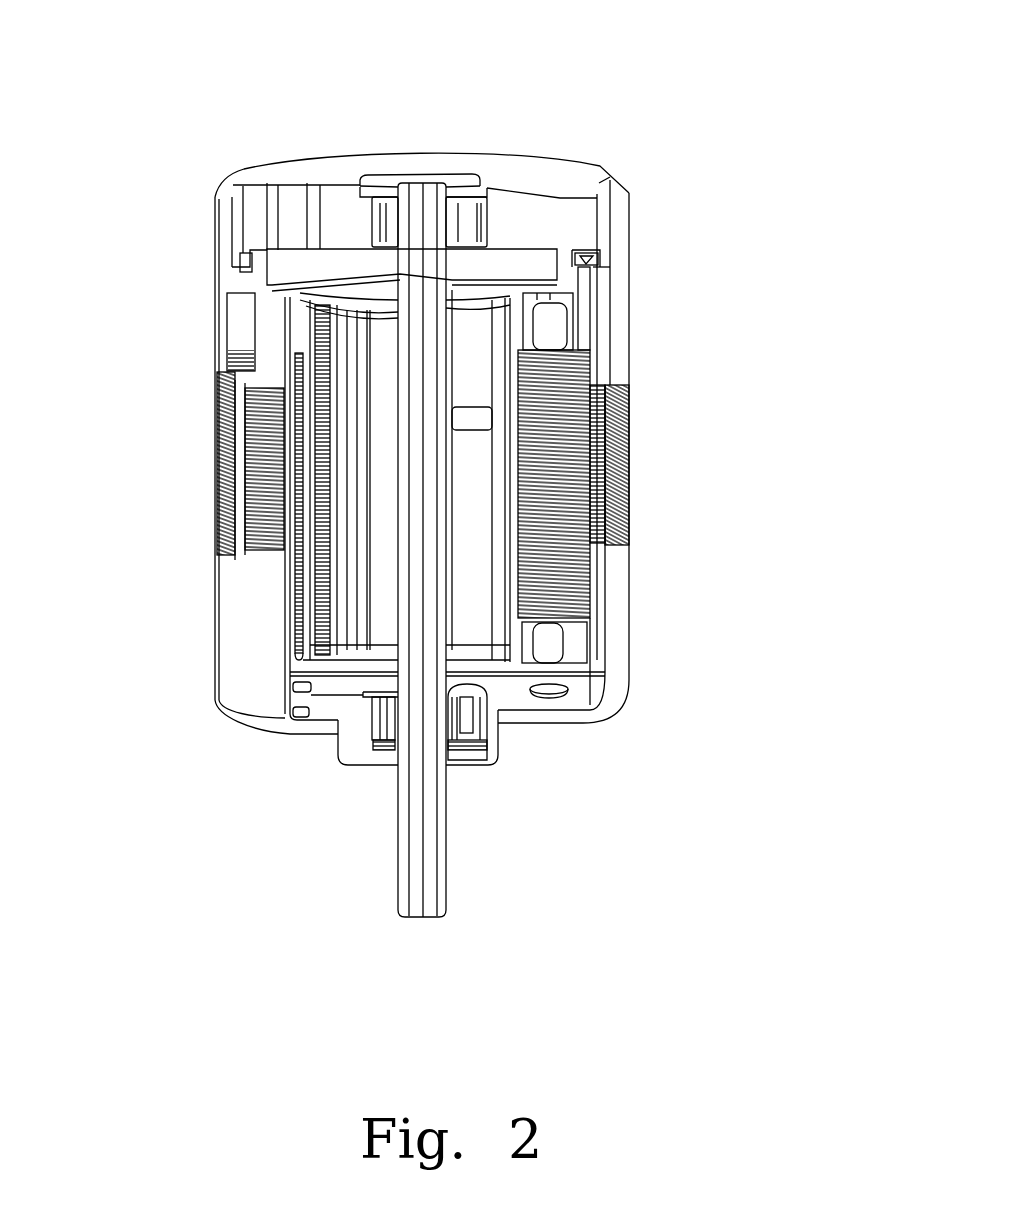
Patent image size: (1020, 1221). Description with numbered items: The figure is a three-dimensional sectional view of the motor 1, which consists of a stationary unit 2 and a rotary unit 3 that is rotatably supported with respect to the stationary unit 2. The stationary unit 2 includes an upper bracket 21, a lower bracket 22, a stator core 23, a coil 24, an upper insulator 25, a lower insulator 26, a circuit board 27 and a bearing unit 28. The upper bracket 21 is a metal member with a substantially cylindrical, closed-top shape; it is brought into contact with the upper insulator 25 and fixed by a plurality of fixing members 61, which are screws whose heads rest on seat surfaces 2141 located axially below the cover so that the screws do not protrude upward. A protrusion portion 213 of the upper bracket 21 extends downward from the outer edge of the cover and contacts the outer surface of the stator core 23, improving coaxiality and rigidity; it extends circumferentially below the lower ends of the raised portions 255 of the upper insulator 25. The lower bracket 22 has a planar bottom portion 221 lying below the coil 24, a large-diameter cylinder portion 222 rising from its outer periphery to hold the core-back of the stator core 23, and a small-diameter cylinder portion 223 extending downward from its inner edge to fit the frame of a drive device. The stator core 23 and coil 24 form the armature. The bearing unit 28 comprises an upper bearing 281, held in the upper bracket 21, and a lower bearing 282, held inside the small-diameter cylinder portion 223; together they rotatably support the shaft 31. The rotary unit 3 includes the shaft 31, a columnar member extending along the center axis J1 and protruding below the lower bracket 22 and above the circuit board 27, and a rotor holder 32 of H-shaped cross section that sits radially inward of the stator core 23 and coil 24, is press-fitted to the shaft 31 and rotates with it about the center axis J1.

The motor 1 is at (101, 48).
The stationary unit 2 is at (213, 175).
The rotary unit 3 is at (465, 852).
The upper bracket 21 is at (512, 180).
The lower bracket 22 is at (612, 583).
The stator core 23 is at (552, 488).
The coil 24 is at (550, 648).
The upper insulator 25 is at (590, 340).
The lower insulator 26 is at (293, 644).
The circuit board 27 is at (298, 200).
The bearing unit 28 is at (372, 205).
The shaft 31 is at (430, 893).
The rotor holder 32 is at (377, 487).
The fixing member 61 is at (600, 268).
The protrusion portion 213 is at (220, 330).
The bottom portion 221 is at (540, 723).
The large-diameter cylinder portion 222 is at (613, 620).
The small-diameter cylinder portion 223 is at (496, 752).
The raised portion 255 is at (240, 312).
The upper bearing 281 is at (470, 178).
The lower bearing 282 is at (378, 764).
The seat surface 2141 is at (566, 250).
The center axis J1 is at (418, 188).